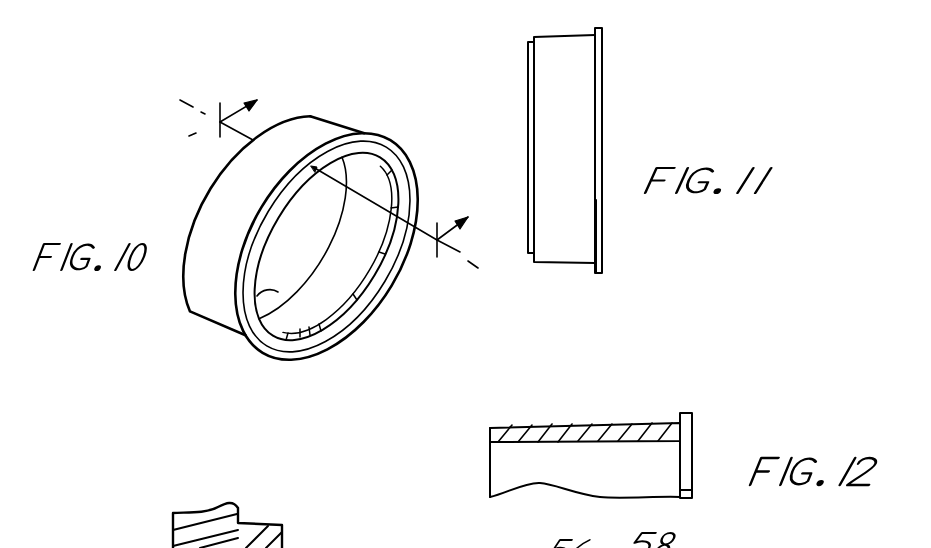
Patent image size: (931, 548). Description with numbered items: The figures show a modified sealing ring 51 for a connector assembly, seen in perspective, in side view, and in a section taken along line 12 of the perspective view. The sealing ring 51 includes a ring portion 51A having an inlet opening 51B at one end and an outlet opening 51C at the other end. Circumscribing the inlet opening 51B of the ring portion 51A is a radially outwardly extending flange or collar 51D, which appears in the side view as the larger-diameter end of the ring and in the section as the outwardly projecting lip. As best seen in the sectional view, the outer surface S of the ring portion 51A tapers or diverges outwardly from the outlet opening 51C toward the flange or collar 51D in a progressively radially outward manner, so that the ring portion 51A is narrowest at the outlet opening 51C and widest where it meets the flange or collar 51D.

In FIG. 10, the section line 12 is at (335, 172).
In FIG. 11, the sealing ring 51 is at (614, 136).
In FIG. 10, the ring portion 51A is at (253, 225).
In FIG. 11, the ring portion 51A is at (629, 149).
In FIG. 10, the inlet opening 51B is at (377, 268).
In FIG. 11, the inlet opening 51B is at (654, 236).
In FIG. 12, the inlet opening 51B is at (739, 518).
In FIG. 10, the outlet opening 51C is at (280, 268).
In FIG. 11, the outlet opening 51C is at (502, 130).
In FIG. 12, the outlet opening 51C is at (526, 473).
In FIG. 10, the flange or collar 51D is at (326, 240).
In FIG. 11, the flange or collar 51D is at (664, 136).
In FIG. 12, the flange or collar 51D is at (750, 440).
In FIG. 12, the outer surface S is at (585, 407).